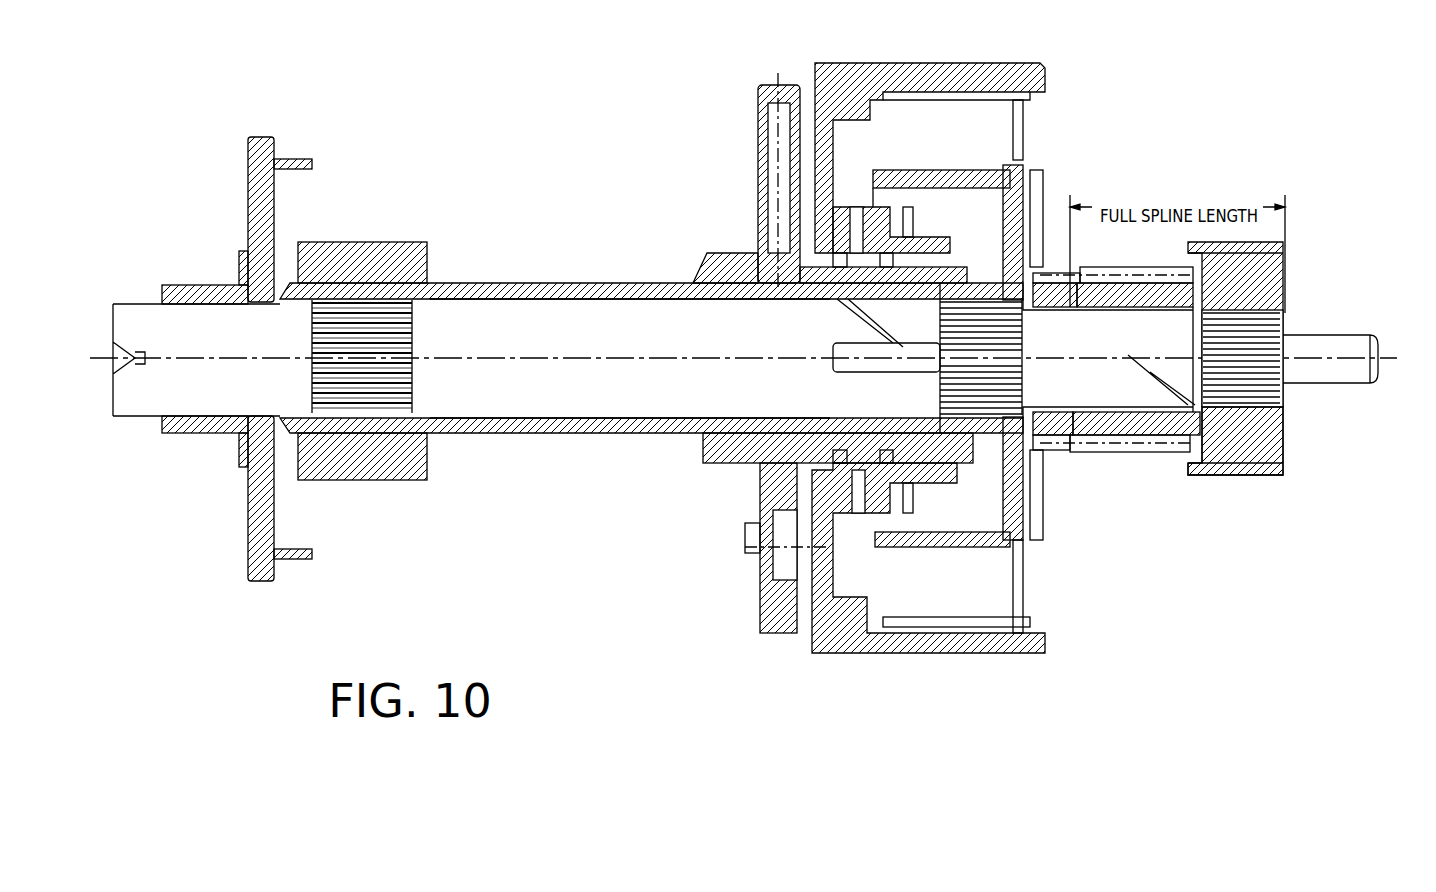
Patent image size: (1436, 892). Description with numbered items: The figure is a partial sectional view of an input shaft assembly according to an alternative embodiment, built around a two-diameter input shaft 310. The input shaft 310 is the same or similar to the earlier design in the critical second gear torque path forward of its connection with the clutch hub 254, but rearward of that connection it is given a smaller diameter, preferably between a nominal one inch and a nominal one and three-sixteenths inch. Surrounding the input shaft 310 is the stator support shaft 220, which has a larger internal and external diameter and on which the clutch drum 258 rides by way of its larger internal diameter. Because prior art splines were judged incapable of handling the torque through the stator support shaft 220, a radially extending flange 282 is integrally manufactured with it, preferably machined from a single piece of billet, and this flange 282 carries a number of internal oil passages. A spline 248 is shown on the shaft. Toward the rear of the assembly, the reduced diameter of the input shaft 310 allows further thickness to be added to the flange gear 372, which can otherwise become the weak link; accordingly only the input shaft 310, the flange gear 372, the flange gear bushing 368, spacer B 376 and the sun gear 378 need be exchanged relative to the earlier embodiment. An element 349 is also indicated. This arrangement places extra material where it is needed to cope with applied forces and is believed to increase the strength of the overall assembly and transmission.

The stator support shaft 220 is at (627, 425).
The spline 248 is at (943, 398).
The clutch hub 254 is at (952, 540).
The clutch drum 258 is at (952, 63).
The radially extending flange 282 is at (758, 168).
The input shaft 310 is at (495, 402).
The sleeve 349 is at (1073, 302).
The flange gear bushing 368 is at (1062, 420).
The flange gear 372 is at (1138, 432).
The spacer B 376 is at (1197, 427).
The sun gear 378 is at (1273, 283).